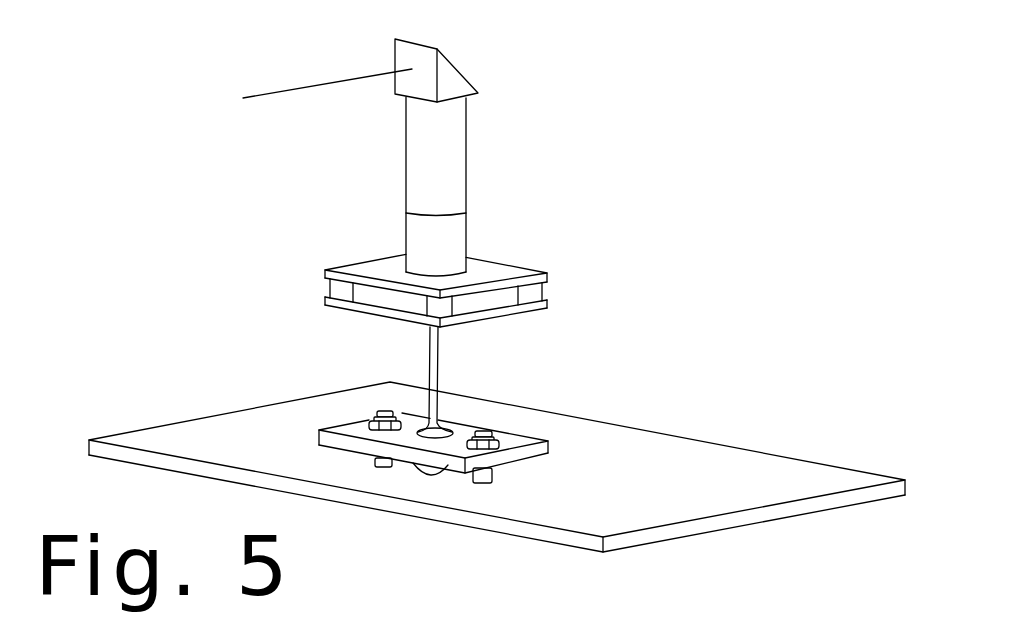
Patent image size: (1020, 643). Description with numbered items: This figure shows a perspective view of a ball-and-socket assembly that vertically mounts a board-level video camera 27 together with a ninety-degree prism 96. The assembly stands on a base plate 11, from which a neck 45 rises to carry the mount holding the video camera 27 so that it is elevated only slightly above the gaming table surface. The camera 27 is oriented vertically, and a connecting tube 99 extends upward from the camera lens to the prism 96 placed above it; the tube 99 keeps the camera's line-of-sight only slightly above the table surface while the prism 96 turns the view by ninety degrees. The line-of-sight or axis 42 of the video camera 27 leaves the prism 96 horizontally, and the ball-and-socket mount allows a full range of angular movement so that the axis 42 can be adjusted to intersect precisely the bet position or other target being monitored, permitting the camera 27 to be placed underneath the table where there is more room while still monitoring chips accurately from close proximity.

The base plate 11 is at (653, 485).
The video camera 27 is at (378, 267).
The line-of-sight 42 is at (300, 82).
The neck 45 is at (433, 370).
The prism 96 is at (450, 83).
The connecting tube 99 is at (438, 157).